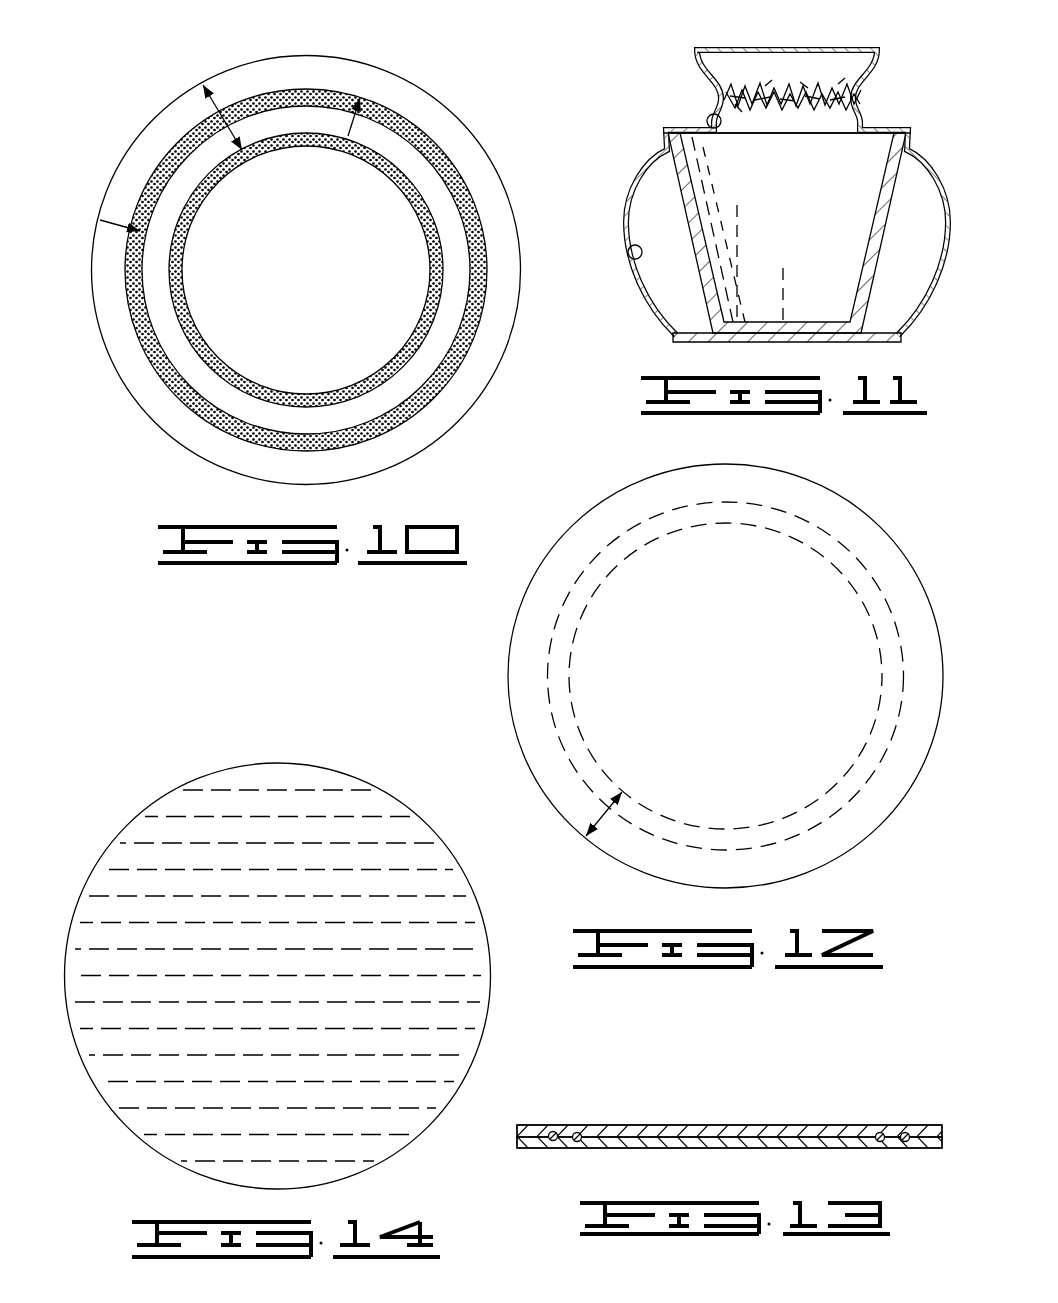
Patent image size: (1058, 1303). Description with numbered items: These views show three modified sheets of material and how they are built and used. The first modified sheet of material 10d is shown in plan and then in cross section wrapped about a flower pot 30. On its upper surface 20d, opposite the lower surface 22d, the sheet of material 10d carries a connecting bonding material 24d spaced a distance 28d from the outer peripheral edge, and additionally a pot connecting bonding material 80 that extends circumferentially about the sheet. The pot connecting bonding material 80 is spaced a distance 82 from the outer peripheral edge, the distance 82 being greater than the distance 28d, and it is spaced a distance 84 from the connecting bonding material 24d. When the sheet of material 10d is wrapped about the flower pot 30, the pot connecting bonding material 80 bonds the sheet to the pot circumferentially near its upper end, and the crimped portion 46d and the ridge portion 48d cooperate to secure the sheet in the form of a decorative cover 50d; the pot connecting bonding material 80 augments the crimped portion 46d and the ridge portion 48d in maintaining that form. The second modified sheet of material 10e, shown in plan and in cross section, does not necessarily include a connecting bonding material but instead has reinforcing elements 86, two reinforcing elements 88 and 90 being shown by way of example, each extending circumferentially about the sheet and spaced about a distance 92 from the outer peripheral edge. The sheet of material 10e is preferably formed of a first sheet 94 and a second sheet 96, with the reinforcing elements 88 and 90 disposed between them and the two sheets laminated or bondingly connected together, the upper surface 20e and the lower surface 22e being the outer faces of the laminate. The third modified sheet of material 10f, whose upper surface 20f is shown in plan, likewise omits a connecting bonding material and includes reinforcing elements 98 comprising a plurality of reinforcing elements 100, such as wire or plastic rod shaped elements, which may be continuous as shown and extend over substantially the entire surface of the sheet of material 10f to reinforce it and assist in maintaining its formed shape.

In FIG. 10, the sheet of material 10d is at (289, 56).
In FIG. 11, the sheet of material 10d is at (637, 164).
In FIG. 12, the sheet of material 10e is at (597, 502).
In FIG. 13, the sheet of material 10e is at (700, 1121).
In FIG. 14, the sheet of material 10f is at (198, 777).
In FIG. 10, the upper surface 20d is at (137, 144).
In FIG. 11, the upper surface 20d is at (628, 263).
In FIG. 12, the upper surface 20d is at (843, 830).
In FIG. 13, the outer covering sheet 20e is at (827, 1123).
In FIG. 14, the outer covering sheet 20f is at (447, 887).
In FIG. 11, the side wall of covering 22d is at (625, 193).
In FIG. 13, the side wall layer 22e is at (812, 1148).
In FIG. 10, the connecting bonding material 24d is at (397, 118).
In FIG. 10, the distance 28d is at (370, 64).
In FIG. 11, the flower pot 30 is at (883, 237).
In FIG. 11, the crimped portion 46d is at (858, 86).
In FIG. 11, the ridge portion 48d is at (853, 60).
In FIG. 11, the decorative cover 50d is at (653, 330).
In FIG. 10, the pot connecting bonding material 80 is at (362, 153).
In FIG. 10, the distance 82 is at (210, 104).
In FIG. 10, the distance 84 is at (170, 240).
In FIG. 12, the reinforcing elements 86 is at (790, 811).
In FIG. 13, the reinforcing elements 86 is at (552, 1151).
In FIG. 12, the reinforcing element 88 is at (543, 742).
In FIG. 13, the reinforcing element 88 is at (550, 1128).
In FIG. 12, the reinforcing element 90 is at (573, 705).
In FIG. 13, the reinforcing element 90 is at (578, 1130).
In FIG. 12, the distance 92 is at (600, 815).
In FIG. 13, the first sheet 94 is at (782, 1123).
In FIG. 13, the second sheet 96 is at (722, 1148).
In FIG. 14, the reinforcing elements 98 is at (288, 814).
In FIG. 14, the reinforcing element 100 is at (372, 815).